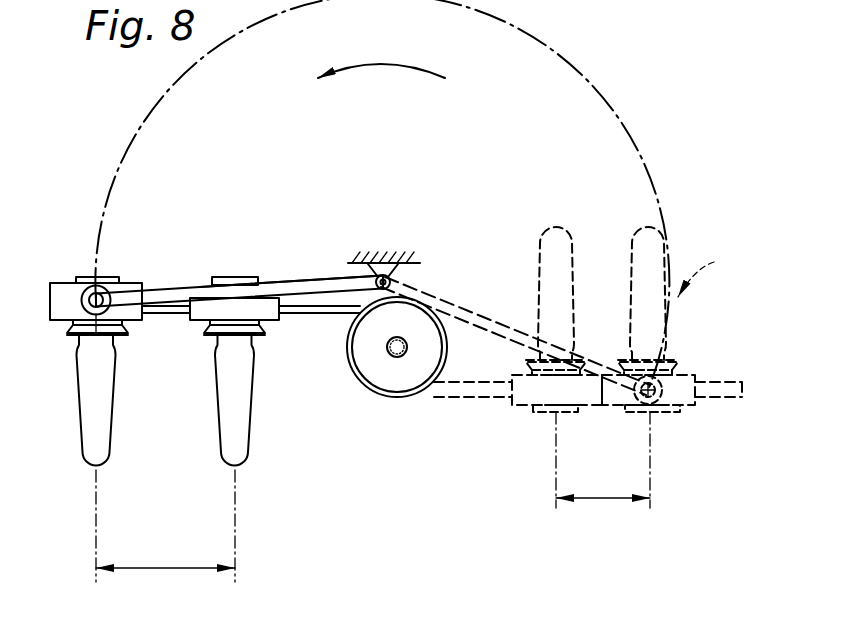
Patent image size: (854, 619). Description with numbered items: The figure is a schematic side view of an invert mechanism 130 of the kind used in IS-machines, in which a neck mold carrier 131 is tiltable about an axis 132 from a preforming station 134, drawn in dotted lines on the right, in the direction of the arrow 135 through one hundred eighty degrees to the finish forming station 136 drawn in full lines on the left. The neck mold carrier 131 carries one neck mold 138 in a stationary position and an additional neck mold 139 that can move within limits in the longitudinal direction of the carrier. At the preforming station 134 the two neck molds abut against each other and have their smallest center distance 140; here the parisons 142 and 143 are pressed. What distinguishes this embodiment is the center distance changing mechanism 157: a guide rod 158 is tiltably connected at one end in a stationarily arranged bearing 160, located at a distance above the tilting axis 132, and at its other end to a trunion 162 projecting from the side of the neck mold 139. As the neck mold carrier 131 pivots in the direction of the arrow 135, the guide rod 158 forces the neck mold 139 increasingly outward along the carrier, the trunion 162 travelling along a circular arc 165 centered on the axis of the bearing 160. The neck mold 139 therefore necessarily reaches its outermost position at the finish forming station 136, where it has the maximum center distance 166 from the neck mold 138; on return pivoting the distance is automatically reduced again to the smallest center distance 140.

The invert mechanism 130 is at (388, 403).
The neck mold carrier 131 is at (313, 315).
The axis 132 is at (392, 356).
The preforming station 134 is at (718, 275).
The arrow 135 is at (377, 68).
The finish forming station 136 is at (72, 262).
The neck mold 138 is at (200, 323).
The neck mold 139 is at (62, 323).
The smallest center distance 140 is at (598, 500).
The parison 142 is at (220, 457).
The parison 143 is at (80, 455).
The center distance changing mechanism 157 is at (310, 272).
The guide rod 158 is at (160, 295).
The bearing 160 is at (393, 279).
The trunion 162 is at (96, 330).
The circular arc 165 is at (625, 110).
The maximum center distance 166 is at (138, 570).